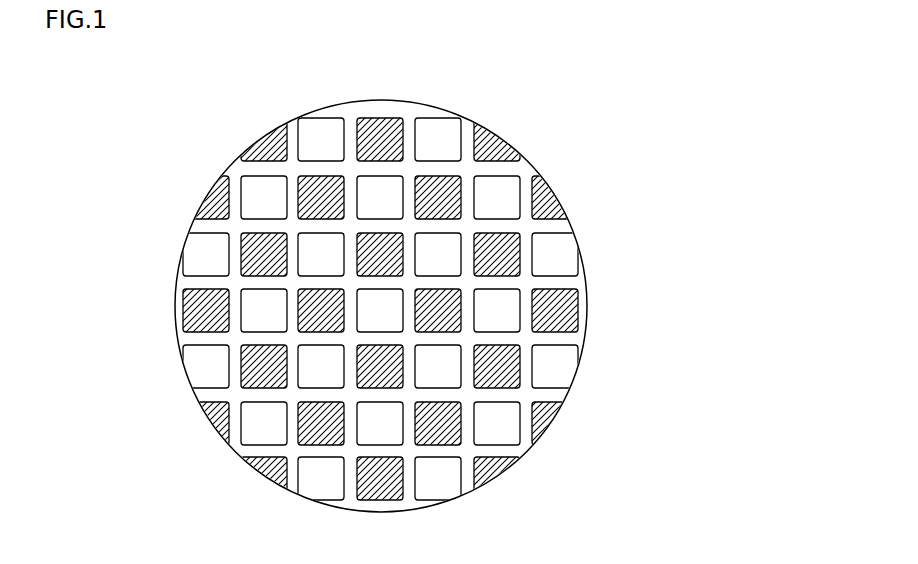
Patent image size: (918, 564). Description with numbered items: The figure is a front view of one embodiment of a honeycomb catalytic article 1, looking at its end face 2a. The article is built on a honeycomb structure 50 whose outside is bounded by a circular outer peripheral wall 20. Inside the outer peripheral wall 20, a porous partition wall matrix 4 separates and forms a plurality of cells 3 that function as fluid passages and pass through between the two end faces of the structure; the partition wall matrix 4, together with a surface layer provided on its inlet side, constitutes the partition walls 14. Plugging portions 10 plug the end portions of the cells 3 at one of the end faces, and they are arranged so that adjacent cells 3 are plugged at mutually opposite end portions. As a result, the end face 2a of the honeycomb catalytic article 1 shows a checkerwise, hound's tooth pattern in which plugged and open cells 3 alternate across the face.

The honeycomb catalytic article 1 is at (177, 211).
The honeycomb structure 50 is at (404, 283).
The end face 2a is at (543, 150).
The cells 3 is at (333, 183).
The partition wall matrix 4 is at (540, 197).
The partition walls 14 is at (470, 203).
The plugging portions 10 is at (257, 370).
The outer peripheral wall 20 is at (578, 259).